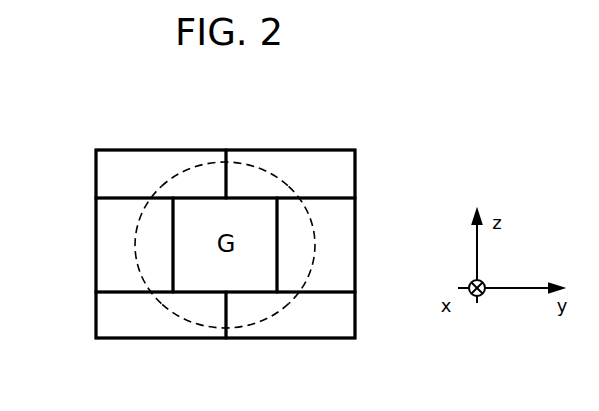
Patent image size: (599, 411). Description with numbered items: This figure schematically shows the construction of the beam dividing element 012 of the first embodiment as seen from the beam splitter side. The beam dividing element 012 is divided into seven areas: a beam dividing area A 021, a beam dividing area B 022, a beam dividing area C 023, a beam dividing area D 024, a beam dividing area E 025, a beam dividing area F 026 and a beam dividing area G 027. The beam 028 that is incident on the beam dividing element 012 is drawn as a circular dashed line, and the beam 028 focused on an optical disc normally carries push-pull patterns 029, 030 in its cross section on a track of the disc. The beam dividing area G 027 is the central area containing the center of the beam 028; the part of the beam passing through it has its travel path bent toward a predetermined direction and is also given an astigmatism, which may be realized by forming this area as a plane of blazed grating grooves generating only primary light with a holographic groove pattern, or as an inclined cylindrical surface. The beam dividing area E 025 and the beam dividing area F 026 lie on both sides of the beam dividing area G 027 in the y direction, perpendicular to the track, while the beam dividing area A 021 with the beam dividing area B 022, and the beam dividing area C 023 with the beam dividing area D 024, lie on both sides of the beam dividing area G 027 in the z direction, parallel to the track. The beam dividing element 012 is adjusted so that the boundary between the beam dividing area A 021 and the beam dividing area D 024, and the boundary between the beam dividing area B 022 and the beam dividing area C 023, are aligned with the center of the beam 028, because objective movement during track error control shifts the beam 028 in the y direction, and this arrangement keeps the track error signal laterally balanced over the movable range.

The beam dividing element 012 is at (100, 340).
The beam dividing area A 021 is at (148, 153).
The beam dividing area B 022 is at (173, 332).
The beam dividing area C 023 is at (305, 332).
The beam dividing area D 024 is at (305, 155).
The beam dividing area E 025 is at (102, 275).
The beam dividing area F 026 is at (348, 270).
The beam dividing area G 027 is at (254, 323).
The beam 028 is at (250, 173).
The push-pull pattern 029 is at (156, 212).
The push-pull pattern 030 is at (300, 215).